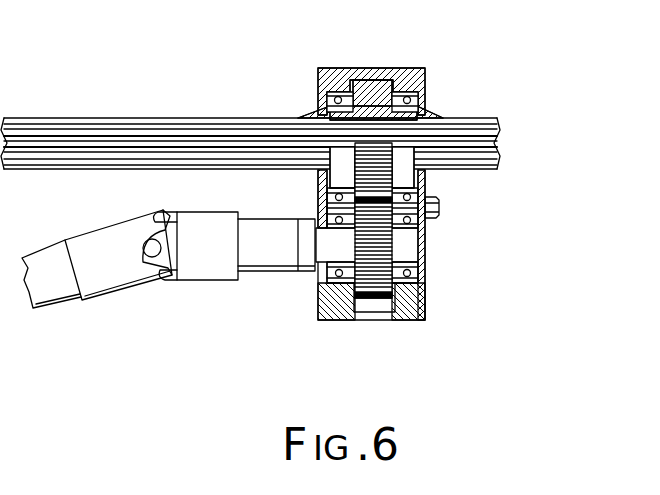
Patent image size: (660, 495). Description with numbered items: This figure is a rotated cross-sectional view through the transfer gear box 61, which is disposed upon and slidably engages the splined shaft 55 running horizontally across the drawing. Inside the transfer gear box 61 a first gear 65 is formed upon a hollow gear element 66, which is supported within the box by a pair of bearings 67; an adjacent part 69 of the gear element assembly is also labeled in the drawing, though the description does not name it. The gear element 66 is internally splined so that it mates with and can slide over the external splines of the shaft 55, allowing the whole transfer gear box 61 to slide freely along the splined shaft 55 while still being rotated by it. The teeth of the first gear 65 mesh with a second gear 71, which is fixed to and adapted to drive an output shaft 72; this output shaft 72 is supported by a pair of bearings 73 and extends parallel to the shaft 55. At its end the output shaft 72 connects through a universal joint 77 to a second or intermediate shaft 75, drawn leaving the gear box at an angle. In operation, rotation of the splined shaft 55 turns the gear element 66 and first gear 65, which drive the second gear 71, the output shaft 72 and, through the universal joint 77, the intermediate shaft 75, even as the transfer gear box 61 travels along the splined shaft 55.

The splined shaft 55 is at (187, 118).
The transfer gear box 61 is at (425, 335).
The first gear 65 is at (362, 74).
The hollow gear element 66 is at (313, 117).
The bearings 67 is at (425, 87).
The hub 69 is at (378, 74).
The second gear 71 is at (375, 313).
The output shaft 72 is at (428, 240).
The bearings 73 is at (428, 272).
The intermediate shaft 75 is at (70, 308).
The universal joint 77 is at (217, 281).